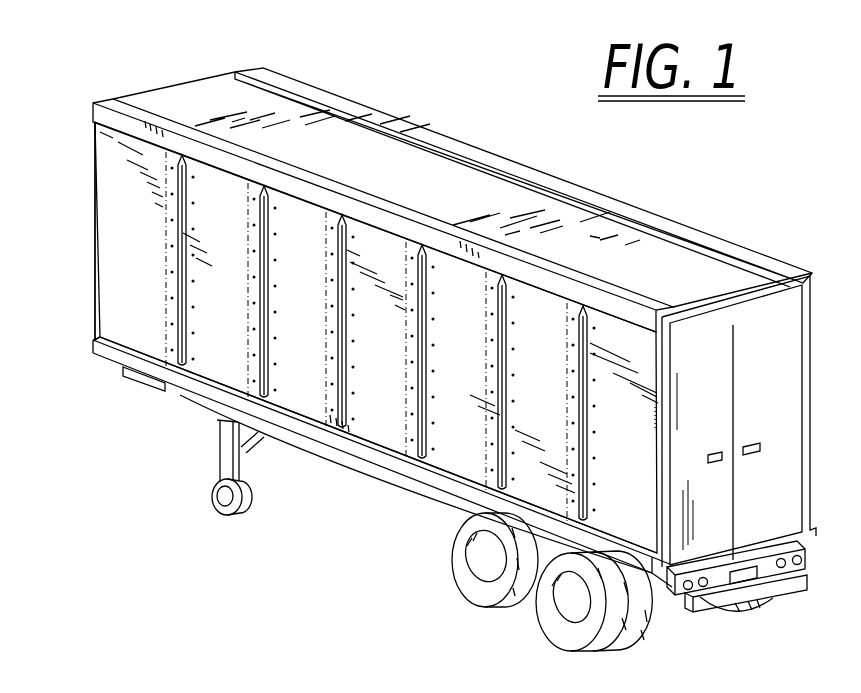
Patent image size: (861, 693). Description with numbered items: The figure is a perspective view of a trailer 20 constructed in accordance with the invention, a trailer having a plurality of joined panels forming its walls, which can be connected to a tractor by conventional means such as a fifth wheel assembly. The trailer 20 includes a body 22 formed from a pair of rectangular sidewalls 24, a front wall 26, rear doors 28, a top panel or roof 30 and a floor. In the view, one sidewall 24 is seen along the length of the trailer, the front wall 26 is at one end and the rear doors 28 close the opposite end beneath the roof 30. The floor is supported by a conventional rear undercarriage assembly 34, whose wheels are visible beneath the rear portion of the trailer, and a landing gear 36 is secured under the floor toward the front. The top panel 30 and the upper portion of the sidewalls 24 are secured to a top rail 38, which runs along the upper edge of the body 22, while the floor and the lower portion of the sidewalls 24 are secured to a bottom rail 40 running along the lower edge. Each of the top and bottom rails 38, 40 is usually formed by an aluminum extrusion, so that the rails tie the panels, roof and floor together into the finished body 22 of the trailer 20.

The trailer 20 is at (738, 224).
The body 22 is at (180, 100).
The sidewall 24 is at (476, 423).
The front wall 26 is at (93, 238).
The rear doors 28 is at (718, 432).
The top panel or roof 30 is at (567, 228).
The rear undercarriage assembly 34 is at (577, 640).
The landing gear 36 is at (218, 463).
The top rail 38 is at (332, 164).
The bottom rail 40 is at (162, 375).